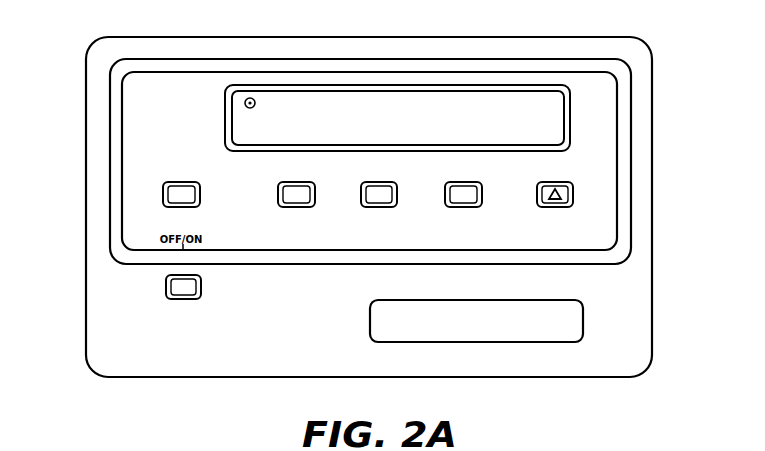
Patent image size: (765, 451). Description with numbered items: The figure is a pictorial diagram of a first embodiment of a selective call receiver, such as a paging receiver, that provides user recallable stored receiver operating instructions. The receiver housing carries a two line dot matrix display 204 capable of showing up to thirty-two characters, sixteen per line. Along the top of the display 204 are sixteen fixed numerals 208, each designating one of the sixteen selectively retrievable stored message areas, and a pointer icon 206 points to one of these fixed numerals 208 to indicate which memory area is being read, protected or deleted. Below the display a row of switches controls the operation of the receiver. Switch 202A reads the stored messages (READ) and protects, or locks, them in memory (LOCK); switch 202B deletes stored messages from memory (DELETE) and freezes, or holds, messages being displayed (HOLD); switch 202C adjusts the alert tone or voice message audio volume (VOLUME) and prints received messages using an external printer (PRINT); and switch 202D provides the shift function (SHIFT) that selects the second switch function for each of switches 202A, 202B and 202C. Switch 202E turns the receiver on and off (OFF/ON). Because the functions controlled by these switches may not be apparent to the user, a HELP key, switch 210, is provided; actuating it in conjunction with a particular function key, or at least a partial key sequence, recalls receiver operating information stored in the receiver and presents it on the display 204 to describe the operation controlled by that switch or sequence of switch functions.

The two line dot matrix display 204 is at (543, 121).
The pointer icon 206 is at (277, 113).
The fixed numerals 208 is at (364, 98).
The HELP key switch 210 is at (163, 197).
The switch 202A is at (280, 207).
The switch 202B is at (363, 207).
The switch 202C is at (447, 207).
The switch 202D is at (539, 207).
The switch 202E is at (166, 285).